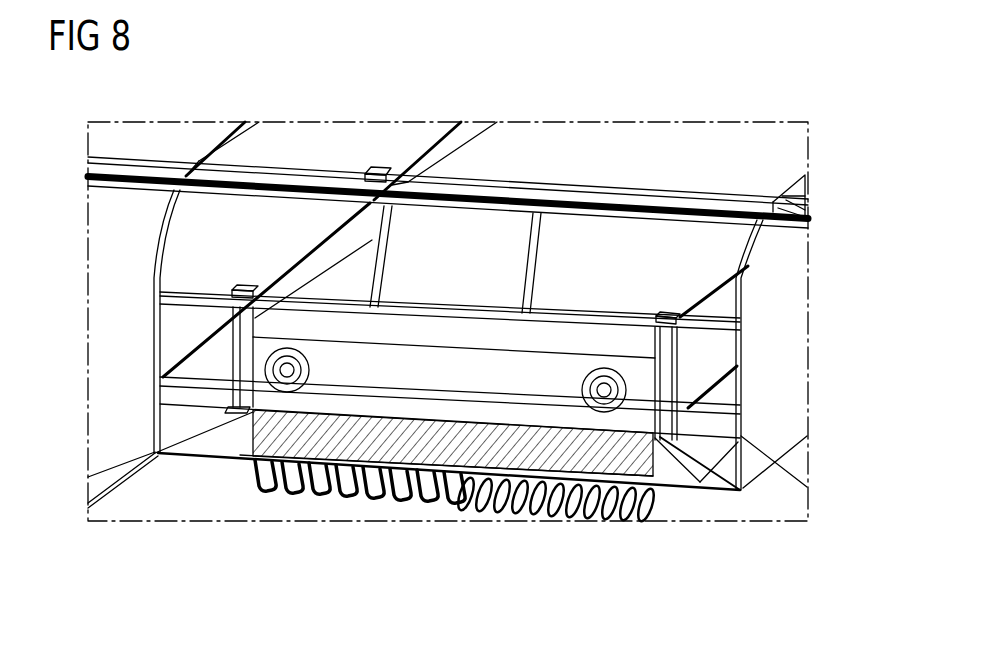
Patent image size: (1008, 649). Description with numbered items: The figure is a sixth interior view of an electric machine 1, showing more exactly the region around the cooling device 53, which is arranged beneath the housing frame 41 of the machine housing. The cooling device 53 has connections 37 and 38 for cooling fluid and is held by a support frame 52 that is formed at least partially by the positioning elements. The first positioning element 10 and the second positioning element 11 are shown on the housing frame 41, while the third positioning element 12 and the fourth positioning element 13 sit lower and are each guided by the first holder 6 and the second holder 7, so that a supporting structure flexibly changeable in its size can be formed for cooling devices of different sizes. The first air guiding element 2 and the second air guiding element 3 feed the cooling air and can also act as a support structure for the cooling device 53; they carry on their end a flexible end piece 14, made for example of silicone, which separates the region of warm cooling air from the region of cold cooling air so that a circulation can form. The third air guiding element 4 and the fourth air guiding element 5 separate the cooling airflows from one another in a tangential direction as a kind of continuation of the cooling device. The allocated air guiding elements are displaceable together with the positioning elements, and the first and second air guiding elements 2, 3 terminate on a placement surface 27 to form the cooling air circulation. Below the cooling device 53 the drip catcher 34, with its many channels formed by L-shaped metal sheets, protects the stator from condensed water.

The electric machine 1 is at (845, 153).
The first air guiding element 2 is at (722, 470).
The second air guiding element 3 is at (175, 447).
The third air guiding element 4 is at (723, 428).
The fourth air guiding element 5 is at (240, 328).
The first holder 6 is at (170, 392).
The second holder 7 is at (192, 292).
The first positioning element 10 is at (377, 166).
The second positioning element 11 is at (797, 182).
The third positioning element 12 is at (240, 285).
The fourth positioning element 13 is at (660, 313).
The flexible end piece 14 is at (183, 448).
The placement surface 27 is at (183, 447).
The drip catcher 34 is at (353, 500).
The connection for cooling fluid 37 is at (604, 392).
The connection for cooling fluid 38 is at (287, 371).
The housing frame 41 is at (220, 150).
The support frame 52 is at (716, 380).
The cooling device 53 is at (588, 340).